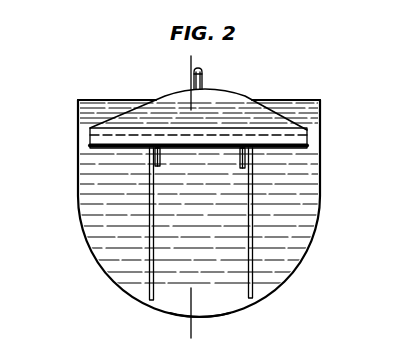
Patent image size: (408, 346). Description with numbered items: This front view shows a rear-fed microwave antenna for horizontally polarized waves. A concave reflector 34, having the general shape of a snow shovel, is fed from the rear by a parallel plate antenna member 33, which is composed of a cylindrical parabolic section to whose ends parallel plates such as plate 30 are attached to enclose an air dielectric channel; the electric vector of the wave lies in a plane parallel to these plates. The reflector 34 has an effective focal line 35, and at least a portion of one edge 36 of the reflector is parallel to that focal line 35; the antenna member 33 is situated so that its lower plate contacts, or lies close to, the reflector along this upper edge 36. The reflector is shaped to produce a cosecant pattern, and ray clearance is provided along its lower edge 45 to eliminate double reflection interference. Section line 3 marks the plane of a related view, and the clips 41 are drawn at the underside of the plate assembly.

The section line 3- 3 is at (185, 67).
The parallel plate 30 is at (157, 116).
The parallel plate antenna member 33 is at (213, 78).
The concave reflector 34 is at (310, 172).
The focal line 35 is at (77, 136).
The edge 36 is at (283, 100).
The bracket clip 41 is at (238, 164).
The lower edge 45 is at (226, 316).